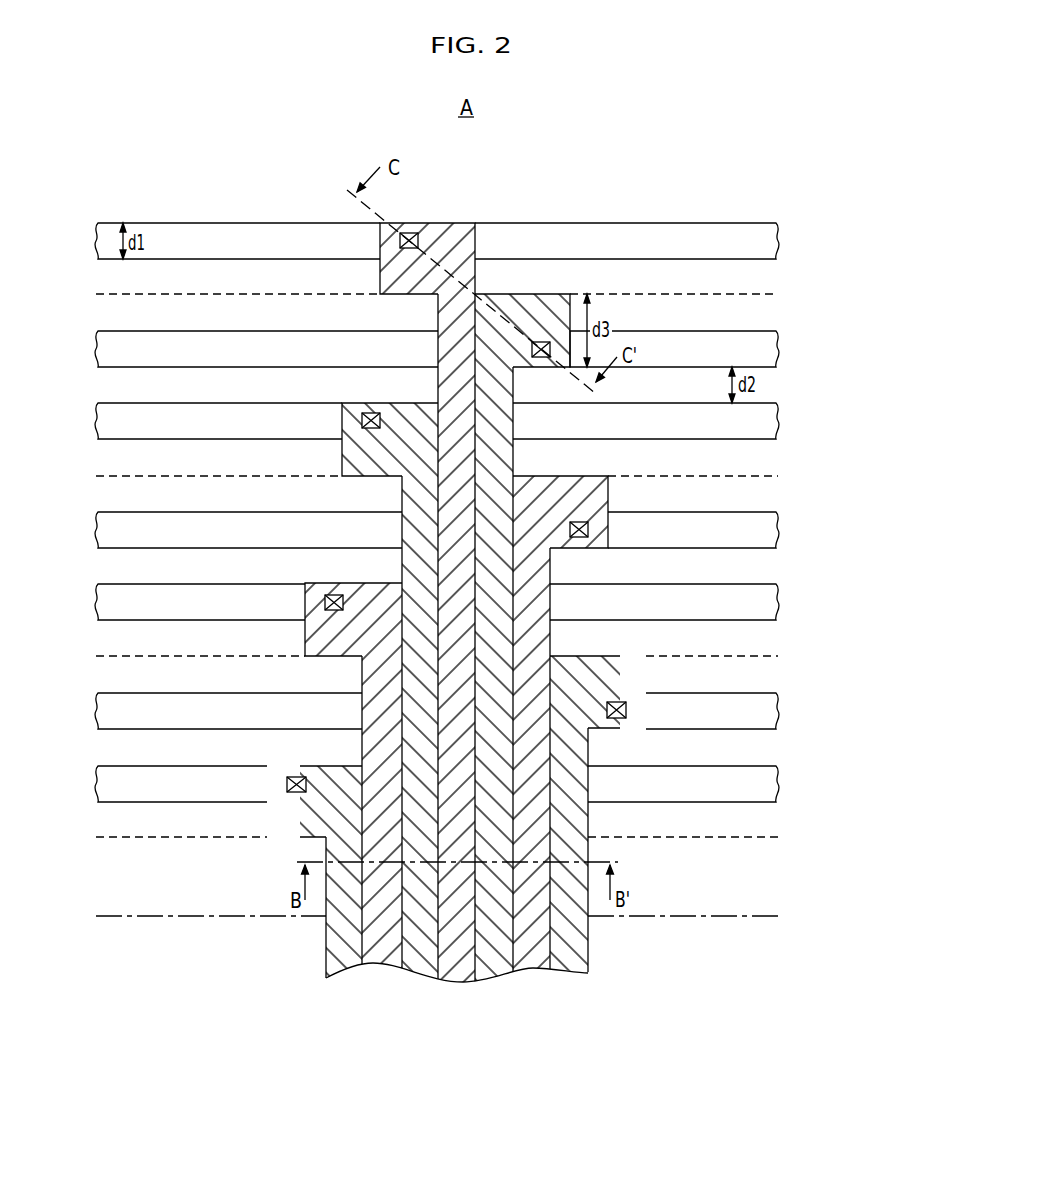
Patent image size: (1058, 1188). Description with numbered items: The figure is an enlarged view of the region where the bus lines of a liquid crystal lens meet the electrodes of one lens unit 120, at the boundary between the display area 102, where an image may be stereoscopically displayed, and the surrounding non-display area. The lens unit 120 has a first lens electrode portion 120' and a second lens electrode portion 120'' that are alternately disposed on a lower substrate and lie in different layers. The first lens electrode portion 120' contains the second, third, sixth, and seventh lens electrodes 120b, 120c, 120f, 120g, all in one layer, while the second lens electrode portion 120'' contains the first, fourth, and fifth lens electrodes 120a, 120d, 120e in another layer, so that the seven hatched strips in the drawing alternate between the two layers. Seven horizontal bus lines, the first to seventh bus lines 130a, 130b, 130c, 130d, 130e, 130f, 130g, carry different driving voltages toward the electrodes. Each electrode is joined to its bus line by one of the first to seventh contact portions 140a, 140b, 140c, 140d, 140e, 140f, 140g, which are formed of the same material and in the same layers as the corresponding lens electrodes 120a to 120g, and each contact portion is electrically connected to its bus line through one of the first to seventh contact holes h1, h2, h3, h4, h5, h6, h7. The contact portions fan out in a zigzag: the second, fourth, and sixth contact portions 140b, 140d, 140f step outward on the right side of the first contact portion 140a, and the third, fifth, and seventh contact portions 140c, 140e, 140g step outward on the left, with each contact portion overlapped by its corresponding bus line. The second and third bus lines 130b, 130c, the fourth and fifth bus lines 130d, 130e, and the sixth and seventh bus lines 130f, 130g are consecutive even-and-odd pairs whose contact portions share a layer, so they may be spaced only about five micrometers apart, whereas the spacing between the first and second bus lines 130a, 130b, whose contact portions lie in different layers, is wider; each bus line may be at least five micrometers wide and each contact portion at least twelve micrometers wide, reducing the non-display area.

The display area 102 is at (638, 942).
The lens unit 120 is at (446, 1134).
The first lens electrode portion 120' is at (408, 1071).
The second lens electrode portion 120'' is at (478, 1072).
The first lens electrode 120a is at (457, 982).
The second lens electrode 120b is at (496, 975).
The third lens electrode 120c is at (420, 975).
The fourth lens electrode 120d is at (535, 968).
The fifth lens electrode 120e is at (382, 964).
The sixth lens electrode 120f is at (574, 973).
The seventh lens electrode 120g is at (345, 976).
The first bus line 130a is at (778, 241).
The second bus line 130b is at (778, 349).
The third bus line 130c is at (778, 421).
The fourth bus line 130d is at (778, 530).
The fifth bus line 130e is at (778, 602).
The sixth bus line 130f is at (778, 711).
The seventh bus line 130g is at (778, 784).
The first contact portion 140a is at (452, 223).
The second contact portion 140b is at (515, 294).
The third contact portion 140c is at (342, 452).
The fourth contact portion 140d is at (608, 492).
The fifth contact portion 140e is at (305, 634).
The sixth contact portion 140f is at (646, 672).
The seventh contact portion 140g is at (267, 816).
The first contact hole h1 is at (400, 240).
The second contact hole h2 is at (541, 342).
The third contact hole h3 is at (362, 421).
The fourth contact hole h4 is at (588, 530).
The fifth contact hole h5 is at (325, 603).
The sixth contact hole h6 is at (626, 710).
The seventh contact hole h7 is at (287, 784).